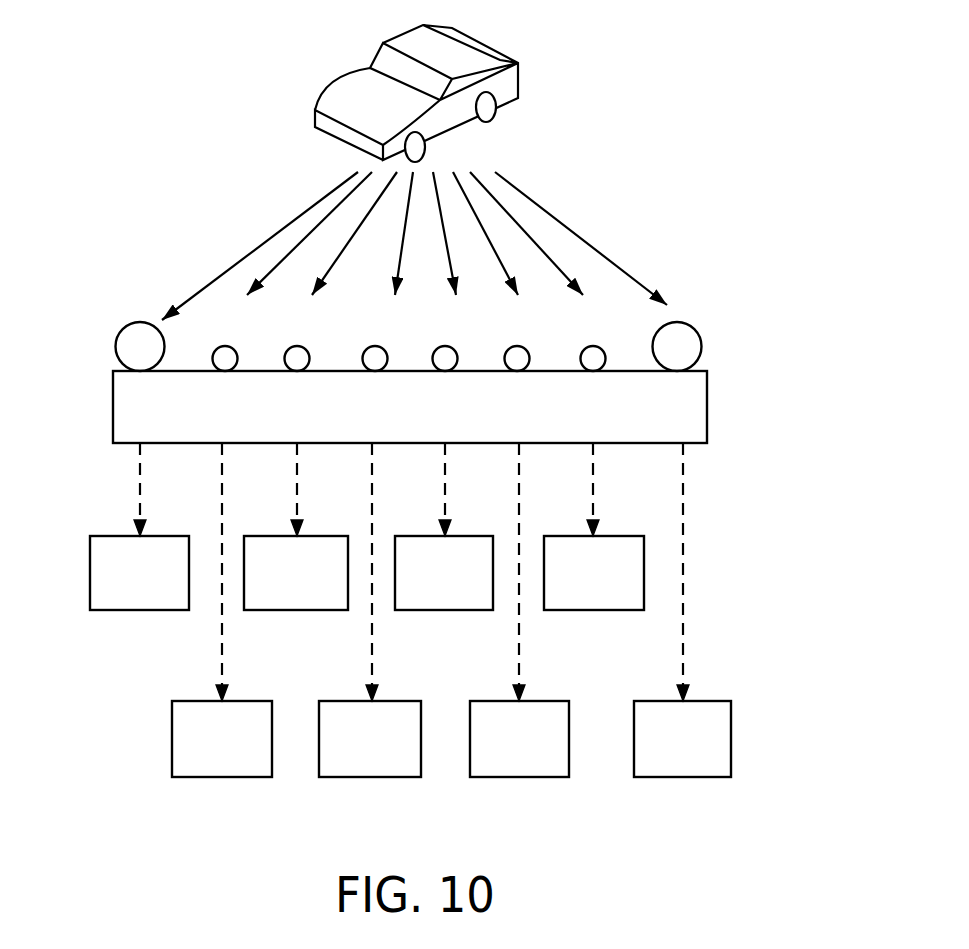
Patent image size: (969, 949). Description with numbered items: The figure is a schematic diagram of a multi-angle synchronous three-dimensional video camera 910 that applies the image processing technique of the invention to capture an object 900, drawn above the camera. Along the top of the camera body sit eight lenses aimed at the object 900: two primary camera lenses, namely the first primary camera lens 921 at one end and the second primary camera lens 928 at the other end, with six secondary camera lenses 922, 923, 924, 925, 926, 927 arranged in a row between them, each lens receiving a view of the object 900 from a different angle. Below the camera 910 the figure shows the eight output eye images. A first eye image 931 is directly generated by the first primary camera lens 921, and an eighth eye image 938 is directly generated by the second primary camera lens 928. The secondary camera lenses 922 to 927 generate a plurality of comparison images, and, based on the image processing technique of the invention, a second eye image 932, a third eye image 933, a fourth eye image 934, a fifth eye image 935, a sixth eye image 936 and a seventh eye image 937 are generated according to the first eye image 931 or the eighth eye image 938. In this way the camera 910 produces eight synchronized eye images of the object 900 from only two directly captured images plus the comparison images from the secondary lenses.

The object 900 is at (498, 45).
The multi-angle synchronous 3D video camera 910 is at (693, 417).
The first primary camera lens 921 is at (135, 330).
The secondary camera lens 922 is at (226, 345).
The secondary camera lens 923 is at (298, 345).
The secondary camera lens 924 is at (376, 345).
The secondary camera lens 925 is at (446, 345).
The secondary camera lens 926 is at (518, 345).
The secondary camera lens 927 is at (594, 345).
The second primary camera lens 928 is at (693, 342).
The first eye image 931 is at (117, 605).
The second eye image 932 is at (188, 778).
The third eye image 933 is at (257, 612).
The fourth eye image 934 is at (340, 780).
The fifth eye image 935 is at (412, 612).
The sixth eye image 936 is at (490, 780).
The seventh eye image 937 is at (575, 612).
The eighth eye image 938 is at (648, 778).